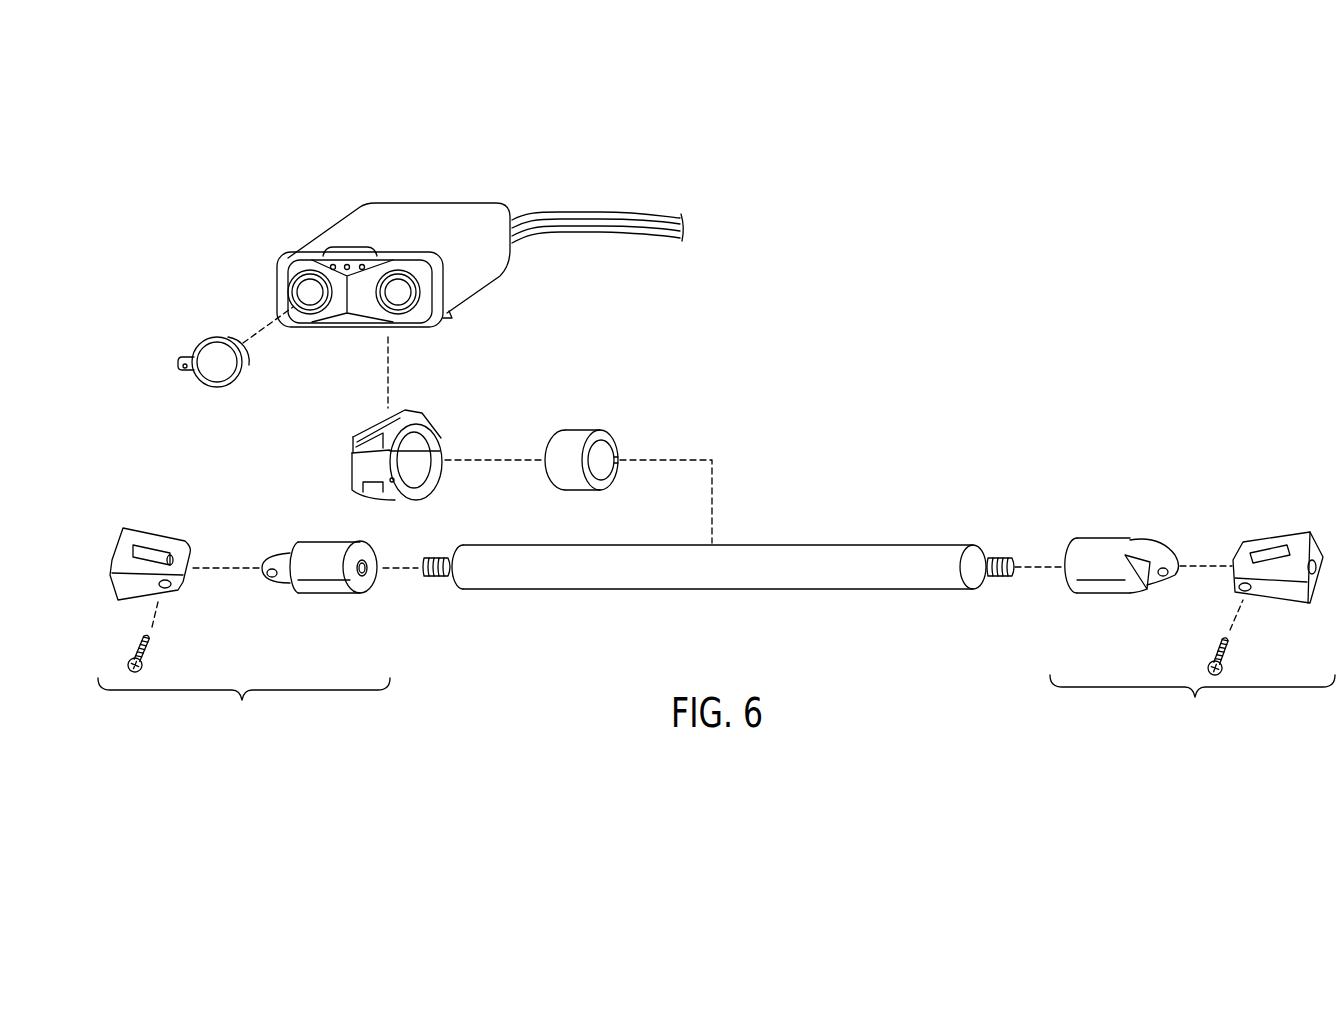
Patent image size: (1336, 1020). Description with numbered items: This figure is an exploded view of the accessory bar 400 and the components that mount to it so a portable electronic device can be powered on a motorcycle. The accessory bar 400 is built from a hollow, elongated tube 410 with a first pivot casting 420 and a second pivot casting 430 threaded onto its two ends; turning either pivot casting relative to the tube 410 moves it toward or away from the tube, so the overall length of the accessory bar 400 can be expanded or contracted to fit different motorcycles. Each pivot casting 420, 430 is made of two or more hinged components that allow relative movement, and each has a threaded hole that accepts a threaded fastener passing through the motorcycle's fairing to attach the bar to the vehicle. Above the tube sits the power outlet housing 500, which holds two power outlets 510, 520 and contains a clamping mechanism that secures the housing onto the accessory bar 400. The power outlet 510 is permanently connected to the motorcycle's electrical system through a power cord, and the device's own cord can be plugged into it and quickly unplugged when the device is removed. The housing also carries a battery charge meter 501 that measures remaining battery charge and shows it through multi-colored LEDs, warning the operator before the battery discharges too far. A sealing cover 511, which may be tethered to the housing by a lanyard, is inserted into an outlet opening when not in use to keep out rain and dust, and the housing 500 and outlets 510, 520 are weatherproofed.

The power outlet housing 500 is at (423, 203).
The battery charge meter 501 is at (347, 244).
The power outlet 510 is at (308, 320).
The power outlet 520 is at (405, 322).
The sealing cover 511 is at (207, 337).
The accessory bar 400 is at (718, 568).
The tube 410 is at (678, 589).
The first pivot casting 420 is at (258, 630).
The second pivot casting 430 is at (1175, 629).